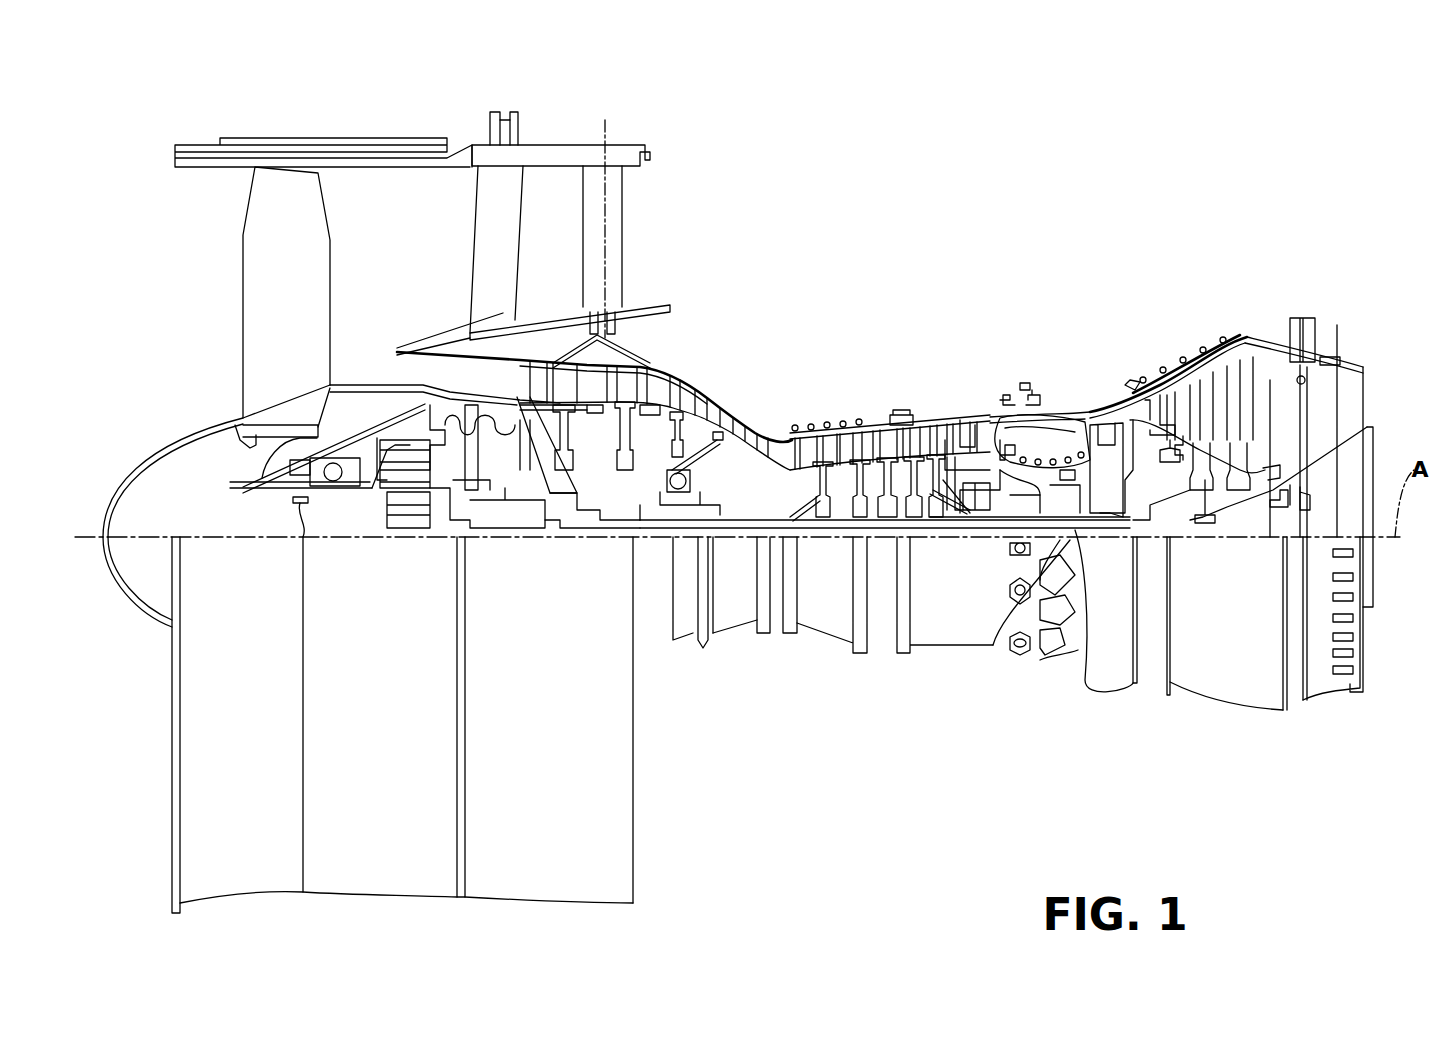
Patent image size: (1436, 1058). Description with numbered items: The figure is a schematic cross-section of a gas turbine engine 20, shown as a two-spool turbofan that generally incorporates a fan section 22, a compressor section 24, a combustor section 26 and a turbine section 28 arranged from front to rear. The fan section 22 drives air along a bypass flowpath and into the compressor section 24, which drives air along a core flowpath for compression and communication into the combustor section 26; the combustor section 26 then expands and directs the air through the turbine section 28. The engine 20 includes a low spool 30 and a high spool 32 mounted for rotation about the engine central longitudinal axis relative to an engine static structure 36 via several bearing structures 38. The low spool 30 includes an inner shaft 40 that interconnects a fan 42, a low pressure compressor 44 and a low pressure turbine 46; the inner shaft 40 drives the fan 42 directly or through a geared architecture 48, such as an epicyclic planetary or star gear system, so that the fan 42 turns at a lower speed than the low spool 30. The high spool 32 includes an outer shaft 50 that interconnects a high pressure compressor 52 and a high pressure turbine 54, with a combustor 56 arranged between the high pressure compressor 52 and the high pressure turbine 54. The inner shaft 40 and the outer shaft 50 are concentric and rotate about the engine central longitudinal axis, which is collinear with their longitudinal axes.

The gas turbine engine 20 is at (744, 411).
The fan section 22 is at (170, 118).
The compressor section 24 is at (918, 273).
The combustor section 26 is at (918, 273).
The turbine section 28 is at (1040, 273).
The low spool 30 is at (727, 487).
The high spool 32 is at (950, 505).
The engine static structure 36 is at (880, 650).
The bearing structures 38 is at (493, 610).
The inner shaft 40 is at (993, 673).
The fan 42 is at (272, 321).
The low pressure compressor 44 is at (650, 385).
The low pressure turbine 46 is at (1212, 373).
The geared architecture 48 is at (412, 486).
The outer shaft 50 is at (1080, 655).
The high pressure compressor 52 is at (805, 440).
The high pressure turbine 54 is at (1110, 425).
The combustor 56 is at (1038, 450).